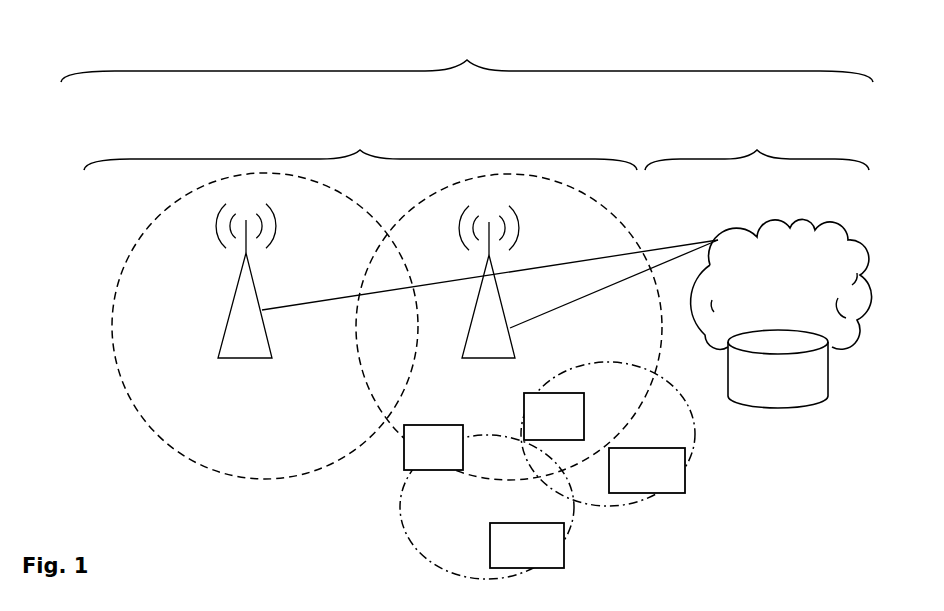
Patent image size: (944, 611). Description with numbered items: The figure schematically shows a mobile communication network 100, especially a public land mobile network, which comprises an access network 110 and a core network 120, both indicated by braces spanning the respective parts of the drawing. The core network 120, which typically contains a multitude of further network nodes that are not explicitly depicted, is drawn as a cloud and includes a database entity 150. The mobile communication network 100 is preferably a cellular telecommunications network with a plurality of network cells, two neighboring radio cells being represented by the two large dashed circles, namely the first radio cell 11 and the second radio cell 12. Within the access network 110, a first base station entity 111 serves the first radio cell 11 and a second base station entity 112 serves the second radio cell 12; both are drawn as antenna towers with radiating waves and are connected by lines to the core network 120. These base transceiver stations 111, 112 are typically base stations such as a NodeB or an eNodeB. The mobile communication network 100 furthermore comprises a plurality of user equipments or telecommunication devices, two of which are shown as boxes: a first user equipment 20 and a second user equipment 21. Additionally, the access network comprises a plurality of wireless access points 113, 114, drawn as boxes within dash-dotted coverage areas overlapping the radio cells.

The mobile communication network 100 is at (467, 59).
The access network 110 is at (360, 147).
The core network 120 is at (567, 236).
The database entity 150 is at (778, 369).
The first radio cell 11 is at (160, 437).
The second radio cell 12 is at (400, 432).
The first base station entity 111 is at (246, 281).
The second base station entity 112 is at (489, 282).
The first user equipment 20 is at (554, 416).
The second user equipment 21 is at (433, 447).
The wireless access point 113 is at (647, 470).
The wireless access point 114 is at (527, 545).